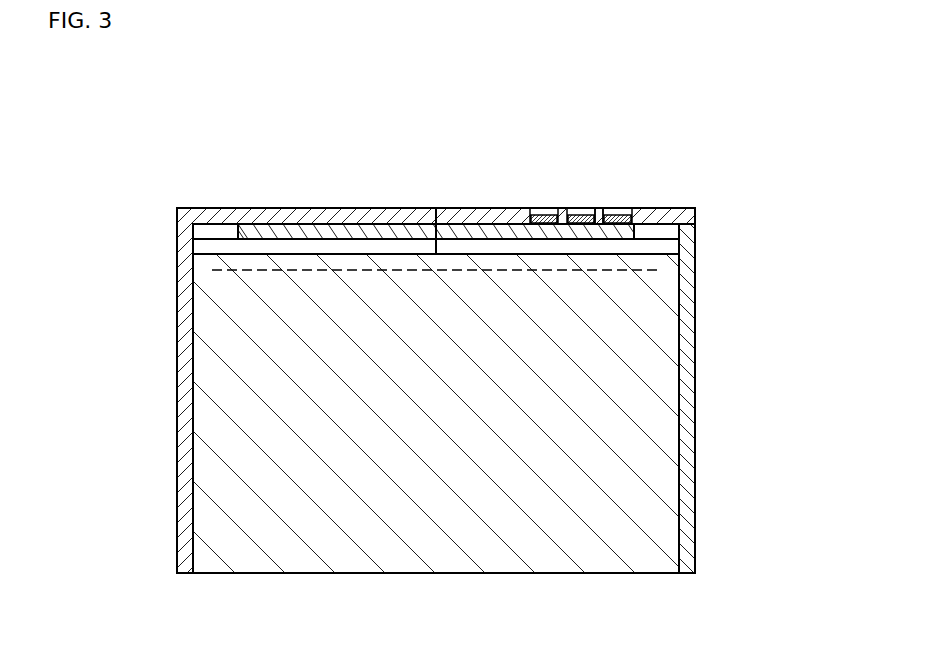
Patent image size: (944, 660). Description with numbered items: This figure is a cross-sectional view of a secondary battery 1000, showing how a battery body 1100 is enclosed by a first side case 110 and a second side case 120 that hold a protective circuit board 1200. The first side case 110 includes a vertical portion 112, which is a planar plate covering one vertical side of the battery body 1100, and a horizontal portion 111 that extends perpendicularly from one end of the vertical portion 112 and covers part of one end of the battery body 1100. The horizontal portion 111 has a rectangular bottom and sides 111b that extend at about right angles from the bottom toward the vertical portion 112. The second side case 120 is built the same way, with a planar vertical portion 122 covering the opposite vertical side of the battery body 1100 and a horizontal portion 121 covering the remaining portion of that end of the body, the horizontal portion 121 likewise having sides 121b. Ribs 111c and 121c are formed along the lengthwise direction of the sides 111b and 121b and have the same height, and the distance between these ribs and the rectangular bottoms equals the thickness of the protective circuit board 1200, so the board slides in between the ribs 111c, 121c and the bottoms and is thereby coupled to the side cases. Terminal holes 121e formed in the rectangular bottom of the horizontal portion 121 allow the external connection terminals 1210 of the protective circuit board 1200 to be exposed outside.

The secondary battery 1000 is at (138, 127).
The first side case 110 is at (177, 407).
The horizontal portion 111 is at (312, 212).
The sides 111b is at (212, 270).
The ribs 111c is at (259, 253).
The vertical portion 112 is at (188, 490).
The second side case 120 is at (698, 401).
The horizontal portion 121 is at (493, 215).
The sides 121b is at (660, 270).
The ribs 121c is at (660, 250).
The terminal holes 121e is at (620, 217).
The vertical portion 122 is at (688, 505).
The battery body 1100 is at (455, 567).
The protective circuit board 1200 is at (405, 226).
The external connection terminals 1210 is at (537, 217).